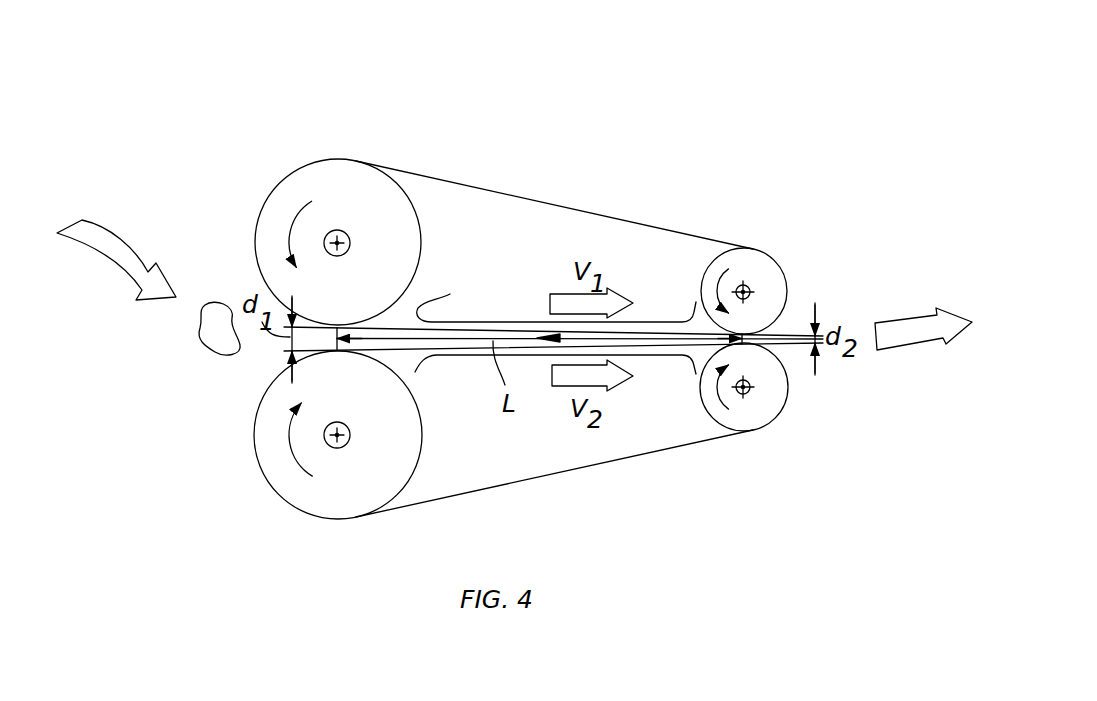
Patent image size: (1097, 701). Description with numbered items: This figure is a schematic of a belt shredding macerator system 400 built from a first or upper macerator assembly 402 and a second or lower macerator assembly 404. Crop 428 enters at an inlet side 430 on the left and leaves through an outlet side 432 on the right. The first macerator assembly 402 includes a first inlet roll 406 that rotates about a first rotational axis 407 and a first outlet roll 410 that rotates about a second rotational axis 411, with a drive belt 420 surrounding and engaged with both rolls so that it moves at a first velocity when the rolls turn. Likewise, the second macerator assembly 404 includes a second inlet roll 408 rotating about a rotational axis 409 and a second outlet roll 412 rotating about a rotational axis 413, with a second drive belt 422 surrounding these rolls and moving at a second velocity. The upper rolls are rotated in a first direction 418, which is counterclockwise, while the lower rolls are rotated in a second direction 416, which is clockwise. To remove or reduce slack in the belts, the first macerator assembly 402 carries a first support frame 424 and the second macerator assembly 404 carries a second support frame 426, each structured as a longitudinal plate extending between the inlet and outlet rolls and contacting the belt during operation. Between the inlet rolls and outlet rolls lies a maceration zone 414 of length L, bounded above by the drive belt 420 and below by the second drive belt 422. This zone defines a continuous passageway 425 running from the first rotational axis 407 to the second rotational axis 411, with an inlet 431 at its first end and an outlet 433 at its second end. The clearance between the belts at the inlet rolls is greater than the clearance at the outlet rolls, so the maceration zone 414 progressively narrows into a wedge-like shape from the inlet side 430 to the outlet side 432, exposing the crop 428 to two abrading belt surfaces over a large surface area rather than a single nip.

The belt shredding macerator system 400 is at (773, 128).
The first macerator assembly 402 is at (245, 153).
The second macerator assembly 404 is at (245, 525).
The first inlet roll 406 is at (306, 166).
The first rotational axis 407 is at (337, 242).
The second inlet roll 408 is at (306, 513).
The rotational axis 409 is at (337, 434).
The first outlet roll 410 is at (780, 263).
The second rotational axis 411 is at (743, 290).
The second outlet roll 412 is at (777, 420).
The rotational axis 413 is at (801, 401).
The maceration zone 414 is at (380, 332).
The second direction 416 is at (288, 445).
The first direction 418 is at (290, 232).
The drive belt 420 is at (562, 205).
The second drive belt 422 is at (559, 473).
The first support frame 424 is at (556, 294).
The continuous passageway 425 is at (535, 337).
The second support frame 426 is at (555, 386).
The crop 428 is at (196, 352).
The inlet side 430 is at (105, 255).
The inlet 431 is at (333, 338).
The outlet side 432 is at (913, 346).
The outlet 433 is at (768, 333).